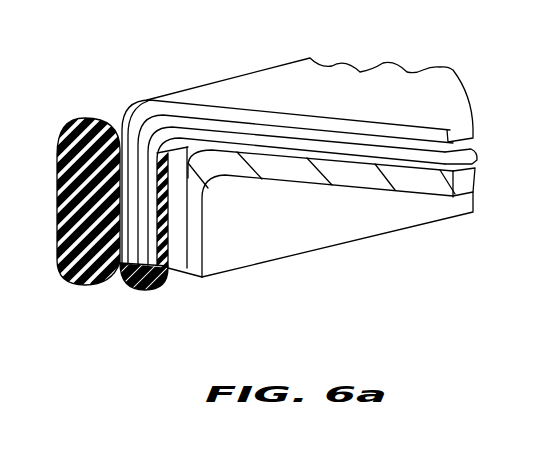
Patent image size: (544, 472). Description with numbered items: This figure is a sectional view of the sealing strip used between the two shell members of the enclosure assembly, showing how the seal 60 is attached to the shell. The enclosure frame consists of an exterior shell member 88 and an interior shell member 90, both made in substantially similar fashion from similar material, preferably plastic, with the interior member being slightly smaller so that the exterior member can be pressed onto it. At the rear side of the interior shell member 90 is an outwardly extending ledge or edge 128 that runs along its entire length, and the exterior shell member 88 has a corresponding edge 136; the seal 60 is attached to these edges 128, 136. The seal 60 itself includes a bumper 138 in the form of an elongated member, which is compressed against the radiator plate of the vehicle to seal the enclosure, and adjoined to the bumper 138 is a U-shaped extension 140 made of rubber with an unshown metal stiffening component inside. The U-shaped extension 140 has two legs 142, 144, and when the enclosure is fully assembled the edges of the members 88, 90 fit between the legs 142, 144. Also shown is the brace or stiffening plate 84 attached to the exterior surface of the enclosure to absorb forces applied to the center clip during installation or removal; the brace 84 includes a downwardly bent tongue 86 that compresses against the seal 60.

The seal 60 is at (262, 212).
The brace 84 is at (360, 224).
The downwardly bent tongue 86 is at (190, 167).
The exterior shell member 88 is at (443, 153).
The interior shell member 90 is at (431, 131).
The edge 128 is at (140, 135).
The edge 136 is at (177, 140).
The bumper 138 is at (90, 128).
The U-shaped extension 140 is at (162, 299).
The leg 142 is at (131, 286).
The leg 144 is at (168, 274).